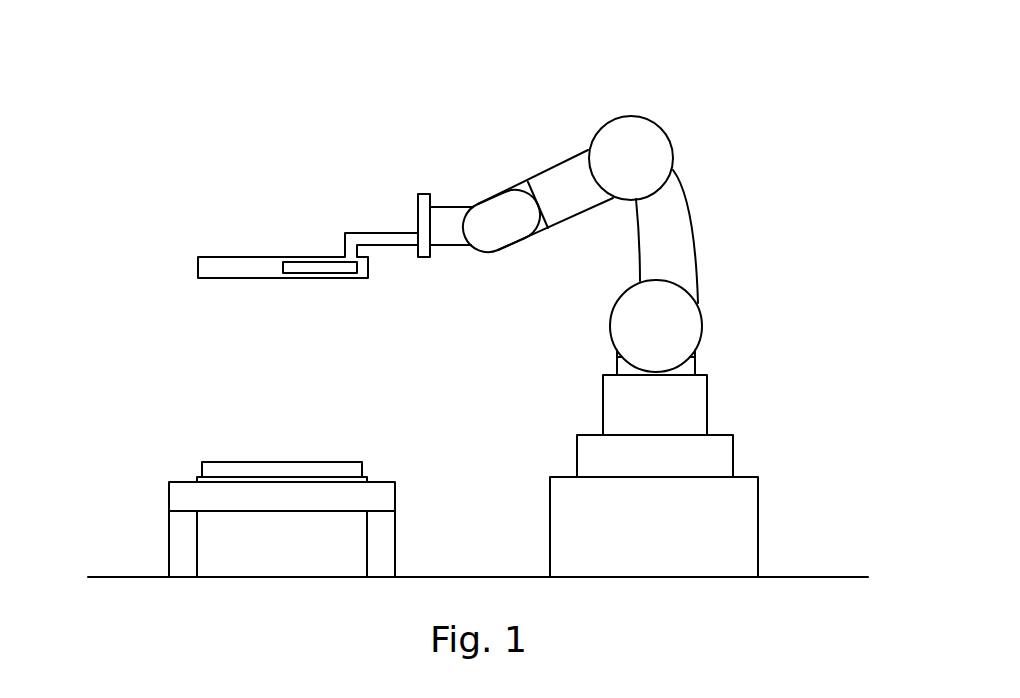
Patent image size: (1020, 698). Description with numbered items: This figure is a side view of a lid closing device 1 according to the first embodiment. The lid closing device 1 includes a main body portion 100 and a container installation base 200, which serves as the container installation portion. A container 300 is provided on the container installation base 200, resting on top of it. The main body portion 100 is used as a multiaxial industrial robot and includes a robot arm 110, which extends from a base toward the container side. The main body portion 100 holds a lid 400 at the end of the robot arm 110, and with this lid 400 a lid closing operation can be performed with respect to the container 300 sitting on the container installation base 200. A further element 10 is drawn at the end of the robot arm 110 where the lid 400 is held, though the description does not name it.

The lid closing device 1 is at (797, 95).
The force sensor 10 is at (427, 193).
The main body portion 100 is at (712, 198).
The robot arm 110 is at (695, 263).
The container installation base 200 is at (169, 495).
The container 300 is at (200, 472).
The lid 400 is at (198, 257).